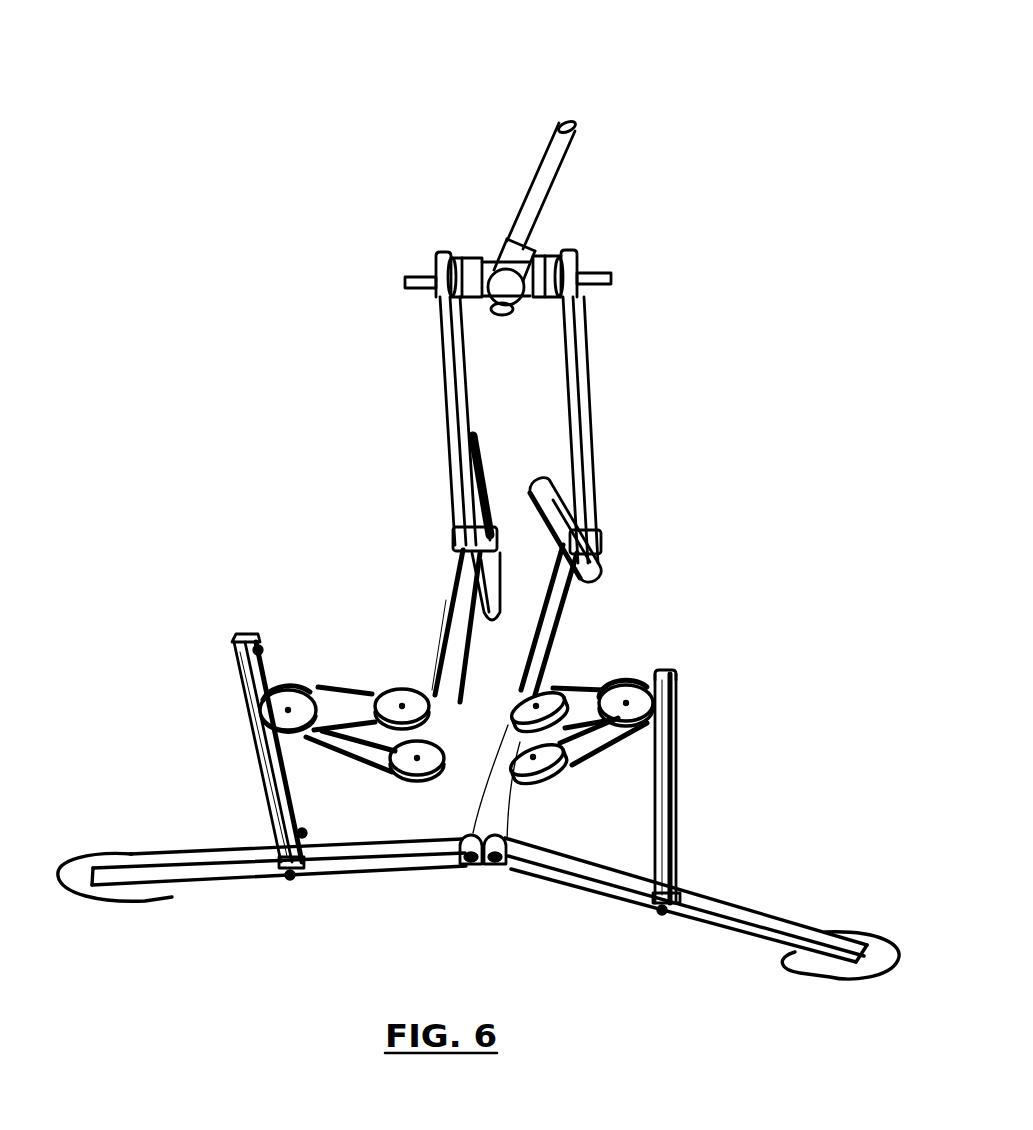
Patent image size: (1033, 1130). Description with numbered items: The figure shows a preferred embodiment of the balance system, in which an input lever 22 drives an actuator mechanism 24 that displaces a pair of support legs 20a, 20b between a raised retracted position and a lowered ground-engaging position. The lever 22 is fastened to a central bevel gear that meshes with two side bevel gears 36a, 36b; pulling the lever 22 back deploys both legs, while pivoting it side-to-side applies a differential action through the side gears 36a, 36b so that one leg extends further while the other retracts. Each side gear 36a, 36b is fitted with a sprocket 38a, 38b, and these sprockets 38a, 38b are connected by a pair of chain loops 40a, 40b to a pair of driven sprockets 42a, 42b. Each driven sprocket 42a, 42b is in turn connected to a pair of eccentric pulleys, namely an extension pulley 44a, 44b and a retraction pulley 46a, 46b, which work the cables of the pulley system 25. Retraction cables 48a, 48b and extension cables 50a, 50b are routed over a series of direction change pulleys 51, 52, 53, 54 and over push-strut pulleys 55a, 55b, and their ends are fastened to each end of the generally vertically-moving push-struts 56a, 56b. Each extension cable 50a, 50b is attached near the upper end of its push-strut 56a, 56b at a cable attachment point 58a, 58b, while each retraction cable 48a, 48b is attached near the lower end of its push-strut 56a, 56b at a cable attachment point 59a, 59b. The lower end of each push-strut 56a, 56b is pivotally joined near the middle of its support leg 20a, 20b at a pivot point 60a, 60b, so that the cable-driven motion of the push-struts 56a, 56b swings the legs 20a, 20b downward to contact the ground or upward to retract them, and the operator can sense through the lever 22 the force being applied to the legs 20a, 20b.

The input lever 22 is at (560, 120).
The actuator mechanism 24 is at (465, 180).
The pulley system 25 is at (287, 528).
The side bevel gear 36a is at (492, 264).
The side bevel gear 36b is at (543, 256).
The sprocket 38a is at (436, 262).
The sprocket 38b is at (597, 262).
The chain loop 40a is at (443, 337).
The chain loop 40b is at (570, 350).
The driven sprocket 42a is at (455, 538).
The driven sprocket 42b is at (596, 532).
The extension pulley 44a is at (458, 462).
The extension pulley 44b is at (535, 488).
The retraction pulley 46a is at (545, 572).
The retraction pulley 46b is at (593, 558).
The retraction cable 48a is at (450, 625).
The retraction cable 48b is at (553, 638).
The extension cable 50a is at (540, 575).
The extension cable 50b is at (545, 612).
The direction change pulley 51 is at (347, 677).
The direction change pulley 52 is at (407, 785).
The direction change pulley 53 is at (462, 866).
The direction change pulley 54 is at (505, 866).
The push-strut pulley 55a is at (280, 713).
The push-strut pulley 55b is at (645, 708).
The push-strut 56a is at (262, 782).
The push-strut 56b is at (678, 778).
The cable attachment point 58a is at (234, 650).
The cable attachment point 58b is at (678, 668).
The cable attachment point 59a is at (283, 840).
The cable attachment point 59b is at (642, 868).
The support leg 20a is at (210, 880).
The support leg 20b is at (737, 928).
The pivot point 60a is at (290, 877).
The pivot point 60b is at (662, 912).